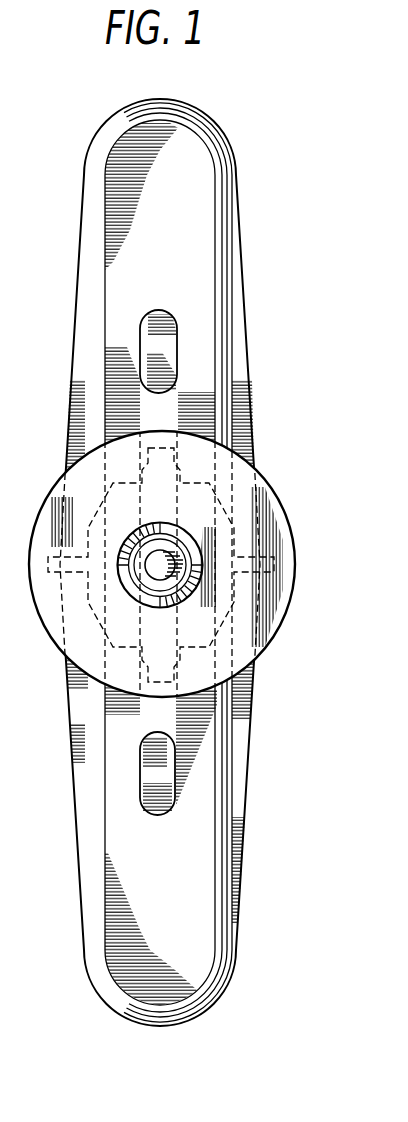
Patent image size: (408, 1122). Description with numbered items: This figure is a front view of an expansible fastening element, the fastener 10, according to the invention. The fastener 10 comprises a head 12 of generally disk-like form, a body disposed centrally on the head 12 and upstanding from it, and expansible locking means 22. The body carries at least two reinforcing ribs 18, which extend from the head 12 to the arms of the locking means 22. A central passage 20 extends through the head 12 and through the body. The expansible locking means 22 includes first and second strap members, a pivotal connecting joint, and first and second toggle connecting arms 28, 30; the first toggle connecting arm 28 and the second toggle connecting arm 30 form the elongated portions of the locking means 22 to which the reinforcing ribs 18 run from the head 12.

The fastener 10 is at (226, 108).
The head 12 is at (259, 493).
The reinforcing ribs 18 is at (180, 388).
The central passage 20 is at (160, 564).
The expansible locking means 22 is at (239, 165).
The first toggle connecting arm 28 is at (166, 267).
The second toggle connecting arm 30 is at (163, 872).